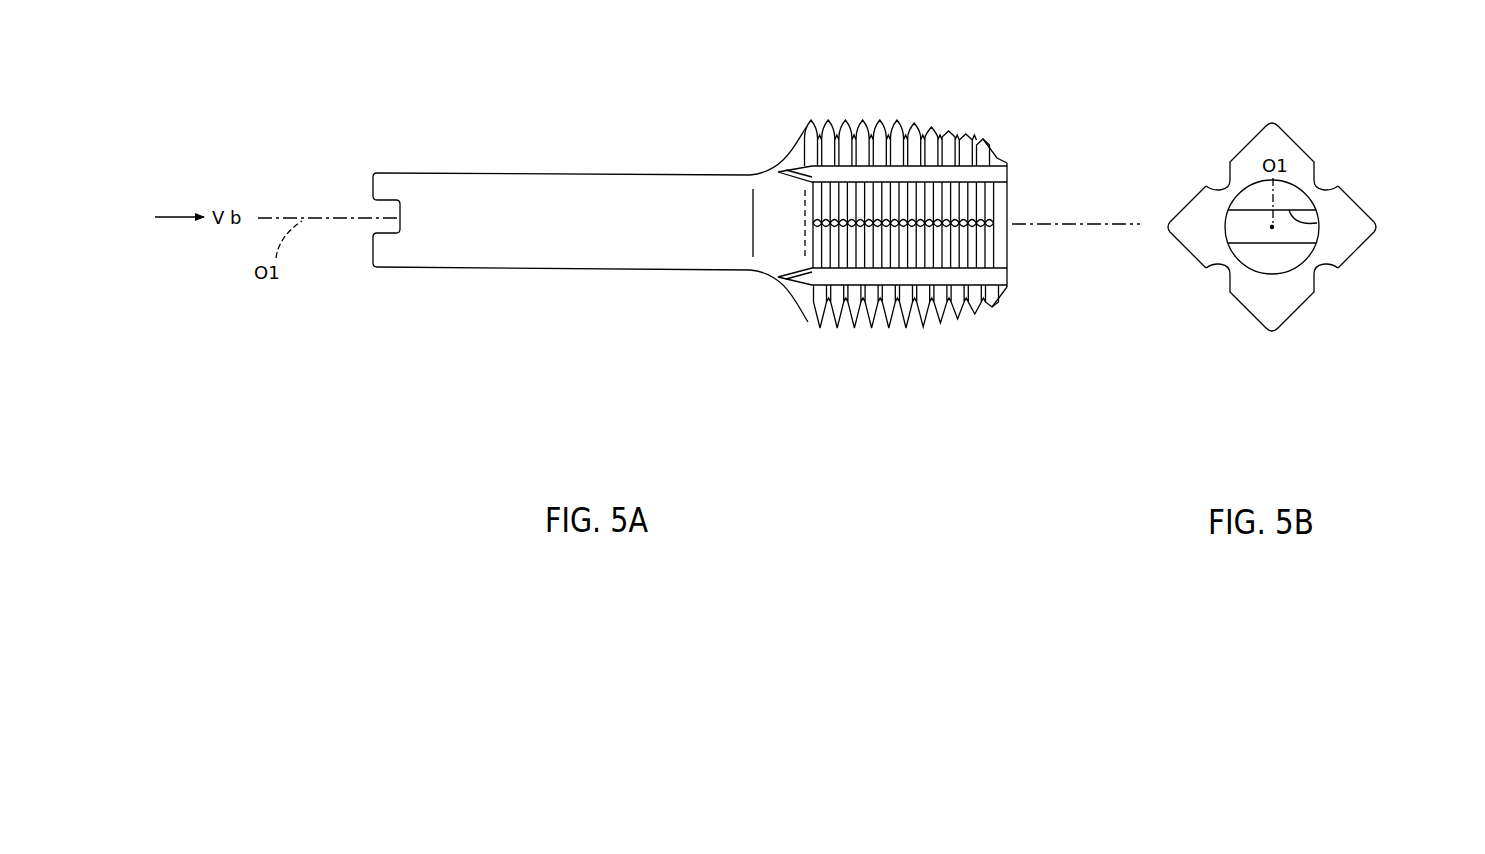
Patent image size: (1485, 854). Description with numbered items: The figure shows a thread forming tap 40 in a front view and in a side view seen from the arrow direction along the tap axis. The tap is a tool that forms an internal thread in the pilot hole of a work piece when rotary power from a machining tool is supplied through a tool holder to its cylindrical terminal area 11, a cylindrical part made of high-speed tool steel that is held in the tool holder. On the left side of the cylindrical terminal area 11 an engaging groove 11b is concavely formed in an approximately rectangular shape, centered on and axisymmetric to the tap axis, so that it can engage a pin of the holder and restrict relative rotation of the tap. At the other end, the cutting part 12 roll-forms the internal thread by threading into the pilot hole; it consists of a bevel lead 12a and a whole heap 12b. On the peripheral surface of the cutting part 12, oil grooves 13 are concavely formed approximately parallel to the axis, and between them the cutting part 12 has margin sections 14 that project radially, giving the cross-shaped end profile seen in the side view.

In FIG. 5A, the thread forming tap 40 is at (423, 350).
In FIG. 5B, the thread forming tap 40 is at (1189, 397).
In FIG. 5A, the cylindrical terminal area 11 is at (553, 262).
In FIG. 5A, the engaging groove 11b is at (384, 203).
In FIG. 5B, the engaging groove 11b is at (1306, 220).
In FIG. 5A, the cutting part 12 is at (1000, 401).
In FIG. 5A, the bevel lead 12a is at (1000, 356).
In FIG. 5A, the whole heap 12b is at (908, 356).
In FIG. 5A, the oil groove 13 is at (806, 172).
In FIG. 5B, the oil groove 13 is at (1232, 184).
In FIG. 5A, the margin section 14 is at (808, 227).
In FIG. 5B, the margin section 14 is at (1279, 106).